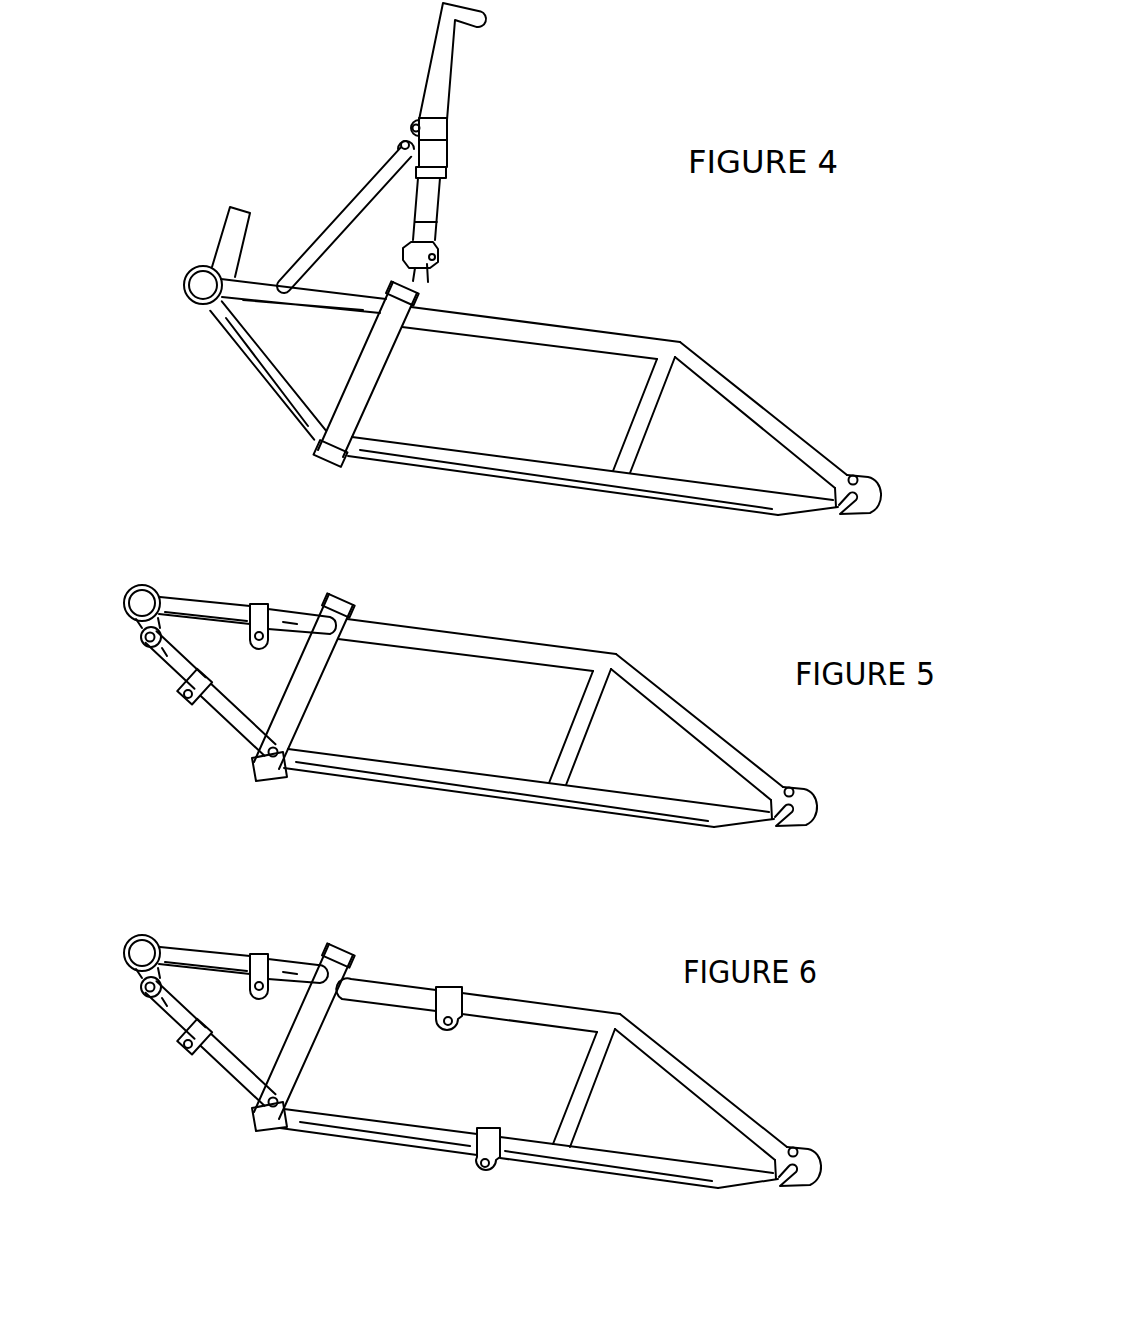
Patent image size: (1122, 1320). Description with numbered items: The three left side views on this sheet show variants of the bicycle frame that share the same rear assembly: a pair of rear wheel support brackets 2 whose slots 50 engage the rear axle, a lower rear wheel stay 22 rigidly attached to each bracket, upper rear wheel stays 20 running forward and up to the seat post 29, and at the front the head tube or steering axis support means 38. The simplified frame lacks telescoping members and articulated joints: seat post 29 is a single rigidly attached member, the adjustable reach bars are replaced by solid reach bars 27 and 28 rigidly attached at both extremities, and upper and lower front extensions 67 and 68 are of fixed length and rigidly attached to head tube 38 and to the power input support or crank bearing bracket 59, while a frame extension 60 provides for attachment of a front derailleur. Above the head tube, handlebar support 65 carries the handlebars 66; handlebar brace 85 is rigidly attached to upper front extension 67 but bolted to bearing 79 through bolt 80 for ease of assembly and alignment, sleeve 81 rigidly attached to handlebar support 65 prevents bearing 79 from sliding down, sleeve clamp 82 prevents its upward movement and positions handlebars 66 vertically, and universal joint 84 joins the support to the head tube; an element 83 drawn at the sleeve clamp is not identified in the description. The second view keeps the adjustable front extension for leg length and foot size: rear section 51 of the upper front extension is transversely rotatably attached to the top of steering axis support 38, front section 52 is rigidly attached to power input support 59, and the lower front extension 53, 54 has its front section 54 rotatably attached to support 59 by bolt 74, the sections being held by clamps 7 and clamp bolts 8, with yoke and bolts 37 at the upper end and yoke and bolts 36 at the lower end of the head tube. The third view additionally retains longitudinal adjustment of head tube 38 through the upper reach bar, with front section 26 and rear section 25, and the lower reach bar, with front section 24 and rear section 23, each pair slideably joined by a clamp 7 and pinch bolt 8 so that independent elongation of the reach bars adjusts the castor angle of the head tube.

In FIG. 4, the rear wheel support bracket 2 is at (862, 468).
In FIG. 5, the rear wheel support bracket 2 is at (798, 790).
In FIG. 6, the rear wheel support bracket 2 is at (805, 1150).
In FIG. 5, the clamp 7 is at (212, 685).
In FIG. 6, the clamp 7 is at (492, 1137).
In FIG. 5, the clamp bolt 8 is at (182, 703).
In FIG. 6, the clamp bolt 8 is at (483, 1167).
In FIG. 4, the upper rear wheel stay 20 is at (752, 403).
In FIG. 5, the upper rear wheel stay 20 is at (688, 717).
In FIG. 6, the upper rear wheel stay 20 is at (695, 1078).
In FIG. 4, the lower rear wheel stay 22 is at (718, 498).
In FIG. 5, the lower rear wheel stay 22 is at (653, 813).
In FIG. 6, the lower rear wheel stay 22 is at (660, 1175).
In FIG. 6, the rear section of lower reach bar 23 is at (530, 1147).
In FIG. 6, the front section of lower reach bar 24 is at (397, 1128).
In FIG. 6, the rear section of upper reach bar 25 is at (510, 1005).
In FIG. 6, the front section of upper reach bar 26 is at (367, 987).
In FIG. 4, the solid upper reach bar 27 is at (568, 333).
In FIG. 5, the solid upper reach bar 27 is at (505, 648).
In FIG. 4, the solid lower reach bar 28 is at (525, 467).
In FIG. 5, the solid lower reach bar 28 is at (460, 780).
In FIG. 4, the seat post 29 is at (642, 430).
In FIG. 5, the seat post 29 is at (580, 743).
In FIG. 6, the seat post 29 is at (583, 1102).
In FIG. 5, the yoke and bolts 36 is at (278, 773).
In FIG. 6, the yoke and bolts 36 is at (278, 1123).
In FIG. 5, the yoke and bolts 37 is at (347, 607).
In FIG. 4, the head tube 38 is at (367, 378).
In FIG. 5, the head tube 38 is at (303, 698).
In FIG. 6, the head tube 38 is at (303, 1048).
In FIG. 4, the slot 50 is at (845, 512).
In FIG. 5, the slot 50 is at (777, 823).
In FIG. 6, the slot 50 is at (783, 1182).
In FIG. 5, the rear section of upper front extension 51 is at (303, 617).
In FIG. 6, the rear section of upper front extension 51 is at (303, 967).
In FIG. 5, the front section of upper front extension 52 is at (200, 605).
In FIG. 6, the front section of upper front extension 52 is at (200, 955).
In FIG. 5, the lower front extension 53 is at (233, 720).
In FIG. 6, the lower front extension 53 is at (233, 1070).
In FIG. 5, the front section of lower front extension link 54 is at (157, 658).
In FIG. 6, the front section of lower front extension link 54 is at (157, 1008).
In FIG. 4, the power input support 59 is at (197, 267).
In FIG. 5, the power input support 59 is at (135, 585).
In FIG. 6, the power input support 59 is at (135, 935).
In FIG. 4, the frame extension 60 is at (235, 223).
In FIG. 4, the handlebar support 65 is at (427, 218).
In FIG. 4, the handlebars 66 is at (448, 63).
In FIG. 4, the upper front extension 67 is at (295, 300).
In FIG. 4, the lower front extension 68 is at (298, 400).
In FIG. 5, the bolt 74 is at (138, 635).
In FIG. 6, the bolt 74 is at (138, 985).
In FIG. 4, the bearing 79 is at (433, 155).
In FIG. 4, the bolt 80 is at (398, 147).
In FIG. 4, the sleeve 81 is at (440, 177).
In FIG. 4, the sleeve clamp 82 is at (447, 127).
In FIG. 4, the clamp bolt 83 is at (413, 118).
In FIG. 4, the universal joint 84 is at (433, 257).
In FIG. 4, the handlebar brace 85 is at (340, 213).